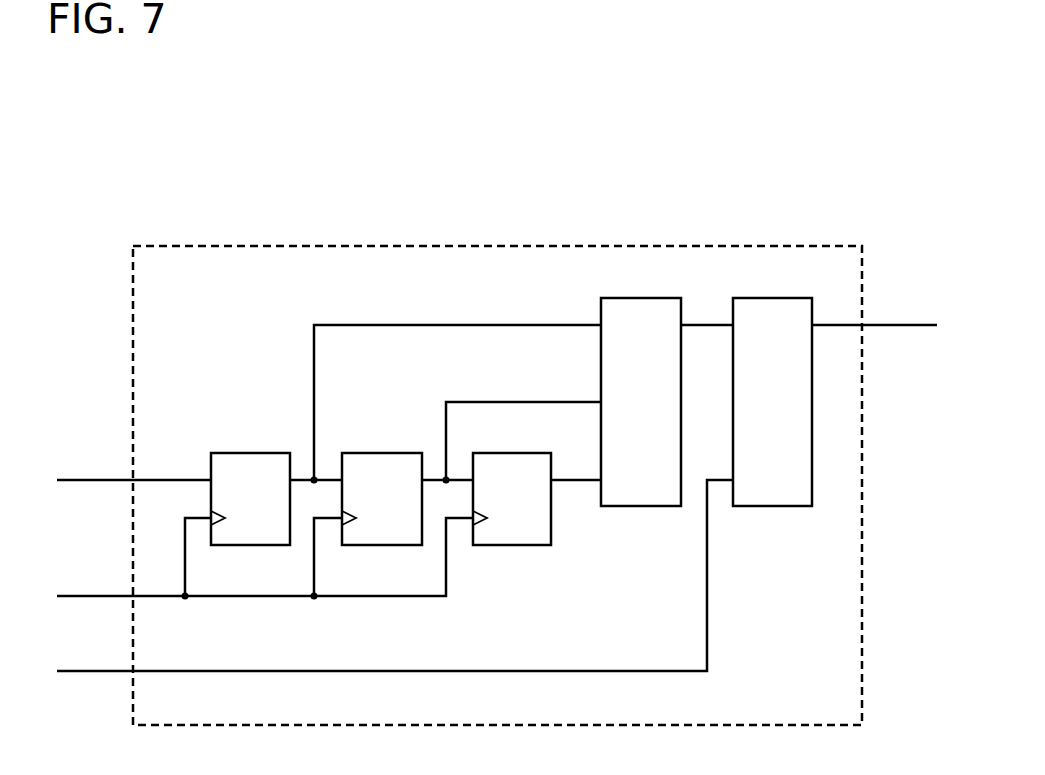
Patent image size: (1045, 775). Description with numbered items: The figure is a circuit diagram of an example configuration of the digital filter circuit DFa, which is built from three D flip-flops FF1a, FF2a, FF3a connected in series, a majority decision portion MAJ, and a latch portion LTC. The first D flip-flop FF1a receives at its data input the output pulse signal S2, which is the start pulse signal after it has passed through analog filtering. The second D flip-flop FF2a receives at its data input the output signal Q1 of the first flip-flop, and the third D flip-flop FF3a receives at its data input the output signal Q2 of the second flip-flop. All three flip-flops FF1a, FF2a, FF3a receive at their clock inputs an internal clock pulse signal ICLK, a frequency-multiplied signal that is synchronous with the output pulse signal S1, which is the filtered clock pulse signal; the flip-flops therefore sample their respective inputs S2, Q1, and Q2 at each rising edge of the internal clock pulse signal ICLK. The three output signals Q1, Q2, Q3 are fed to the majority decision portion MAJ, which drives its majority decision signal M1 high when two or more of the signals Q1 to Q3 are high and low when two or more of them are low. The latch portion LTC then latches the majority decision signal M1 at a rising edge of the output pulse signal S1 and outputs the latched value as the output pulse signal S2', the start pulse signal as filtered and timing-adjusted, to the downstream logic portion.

The digital filter circuit DFa is at (499, 246).
The D flip-flop FF1a is at (253, 453).
The D flip-flop FF2a is at (384, 453).
The D flip-flop FF3a is at (513, 453).
The majority decision portion MAJ is at (644, 298).
The latch portion LTC is at (774, 298).
The output pulse signal S2 is at (134, 466).
The output signal Q1 is at (445, 390).
The output signal Q2 is at (511, 429).
The output signal Q3 is at (576, 467).
The majority decision signal M1 is at (707, 311).
The output pulse signal S2' is at (874, 312).
The internal clock pulse signal ICLK is at (265, 559).
The output pulse signal S1 is at (395, 575).